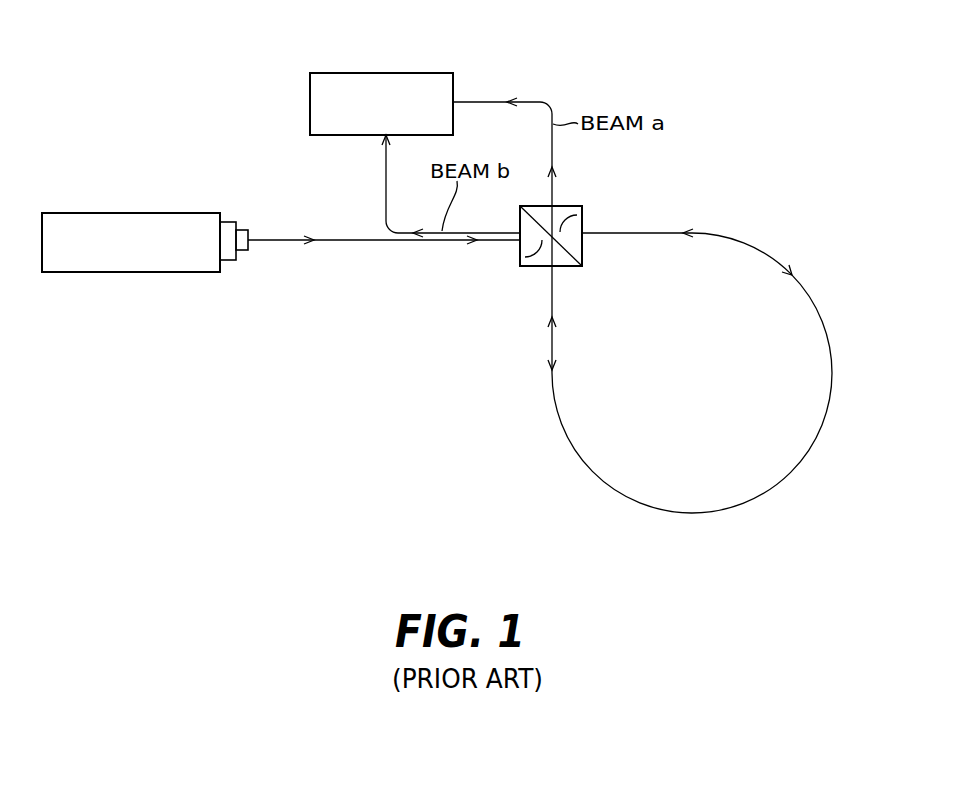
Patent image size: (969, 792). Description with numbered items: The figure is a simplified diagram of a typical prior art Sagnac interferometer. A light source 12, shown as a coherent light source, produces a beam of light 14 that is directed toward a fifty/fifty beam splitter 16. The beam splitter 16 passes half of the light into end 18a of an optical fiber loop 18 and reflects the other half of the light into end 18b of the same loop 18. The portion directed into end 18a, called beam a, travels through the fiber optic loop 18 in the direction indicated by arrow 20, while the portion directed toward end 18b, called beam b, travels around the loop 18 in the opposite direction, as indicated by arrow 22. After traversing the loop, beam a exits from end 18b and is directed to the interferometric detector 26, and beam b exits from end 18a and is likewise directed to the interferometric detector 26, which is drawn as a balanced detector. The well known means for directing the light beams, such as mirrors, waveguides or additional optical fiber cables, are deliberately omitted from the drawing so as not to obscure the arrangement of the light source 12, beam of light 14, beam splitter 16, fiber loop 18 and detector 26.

The light source 12 is at (52, 213).
The beam of light 14 is at (289, 243).
The beam splitter 16 is at (566, 206).
The optical fiber loop 18 is at (833, 352).
The end of optical fiber loop 18a is at (562, 231).
The end of optical fiber loop 18b is at (540, 258).
The arrow 20 is at (692, 233).
The arrow 22 is at (792, 270).
The interferometric detector 26 is at (453, 73).